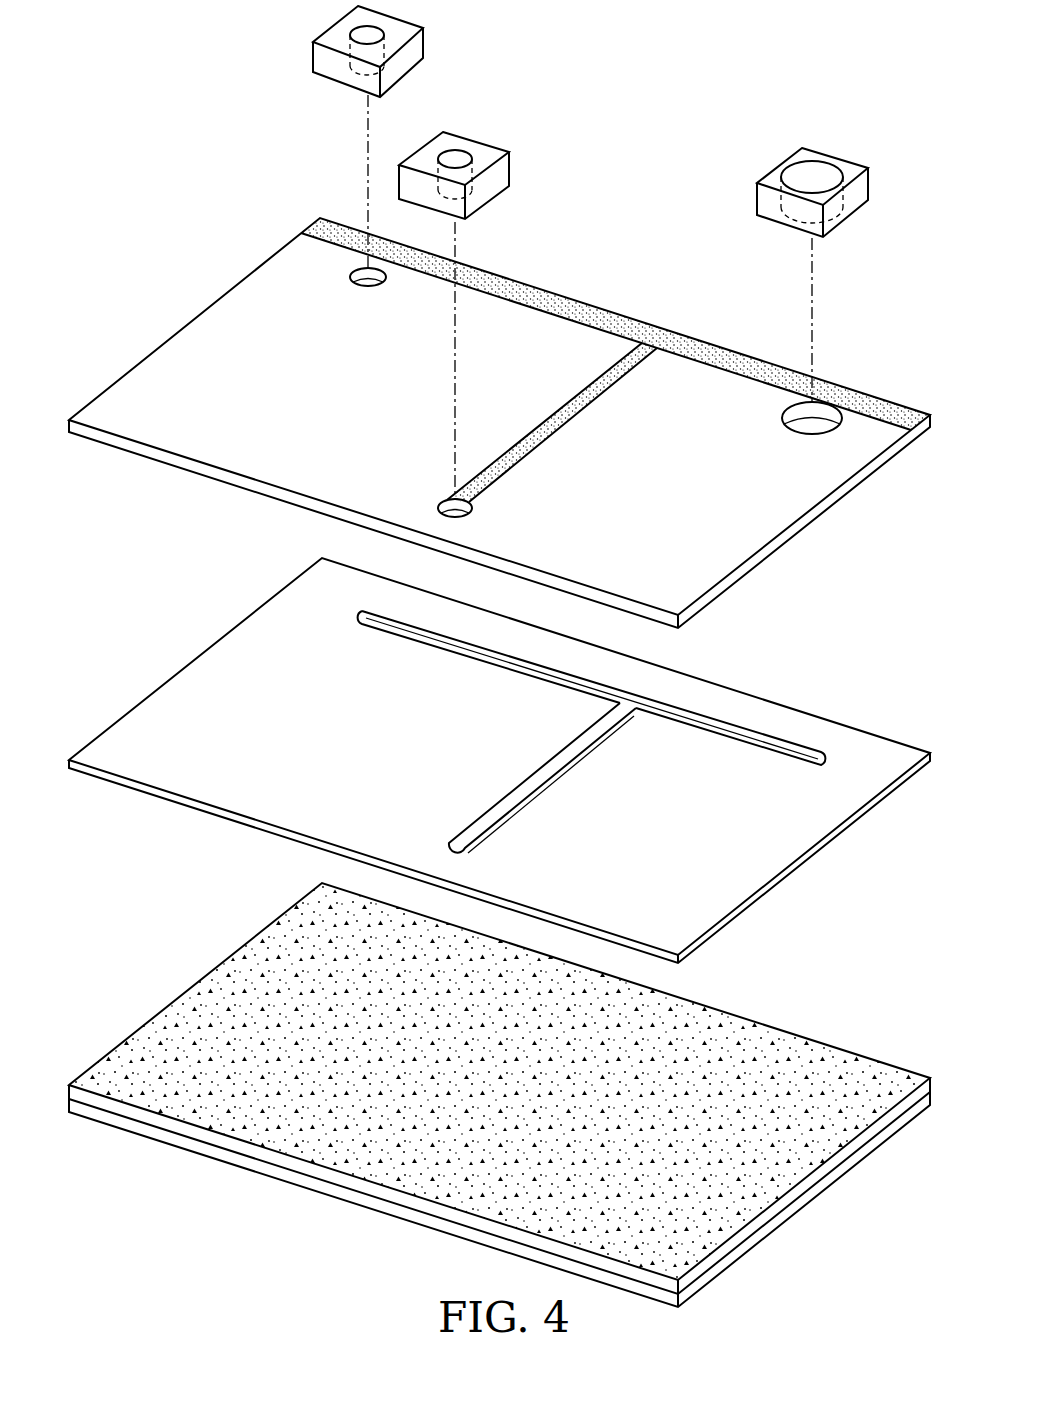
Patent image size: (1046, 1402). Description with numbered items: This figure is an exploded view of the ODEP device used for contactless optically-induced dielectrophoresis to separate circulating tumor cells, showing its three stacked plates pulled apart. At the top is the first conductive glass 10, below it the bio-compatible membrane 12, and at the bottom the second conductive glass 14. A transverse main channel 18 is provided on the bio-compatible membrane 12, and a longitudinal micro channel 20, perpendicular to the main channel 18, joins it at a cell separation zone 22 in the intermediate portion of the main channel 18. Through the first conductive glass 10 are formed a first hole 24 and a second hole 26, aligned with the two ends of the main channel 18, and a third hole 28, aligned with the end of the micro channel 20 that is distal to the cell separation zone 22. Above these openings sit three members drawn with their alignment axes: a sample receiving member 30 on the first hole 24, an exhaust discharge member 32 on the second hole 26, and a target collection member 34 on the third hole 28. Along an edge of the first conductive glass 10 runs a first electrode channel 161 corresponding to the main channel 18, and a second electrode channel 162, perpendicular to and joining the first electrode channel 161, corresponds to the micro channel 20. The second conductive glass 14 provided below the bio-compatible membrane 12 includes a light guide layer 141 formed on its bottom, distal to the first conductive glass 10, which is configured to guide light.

The first conductive glass 10 is at (193, 317).
The bio-compatible membrane 12 is at (240, 622).
The second conductive glass 14 is at (177, 1127).
The light guide layer 141 is at (238, 1162).
The first electrode channel 161 is at (557, 298).
The second electrode channel 162 is at (598, 403).
The main channel 18 is at (483, 660).
The micro channel 20 is at (550, 773).
The cell separation zone 22 is at (633, 705).
The first hole 24 is at (827, 423).
The second hole 26 is at (362, 281).
The third hole 28 is at (447, 502).
The sample receiving member 30 is at (812, 177).
The exhaust discharge member 32 is at (375, 35).
The target collection member 34 is at (453, 157).